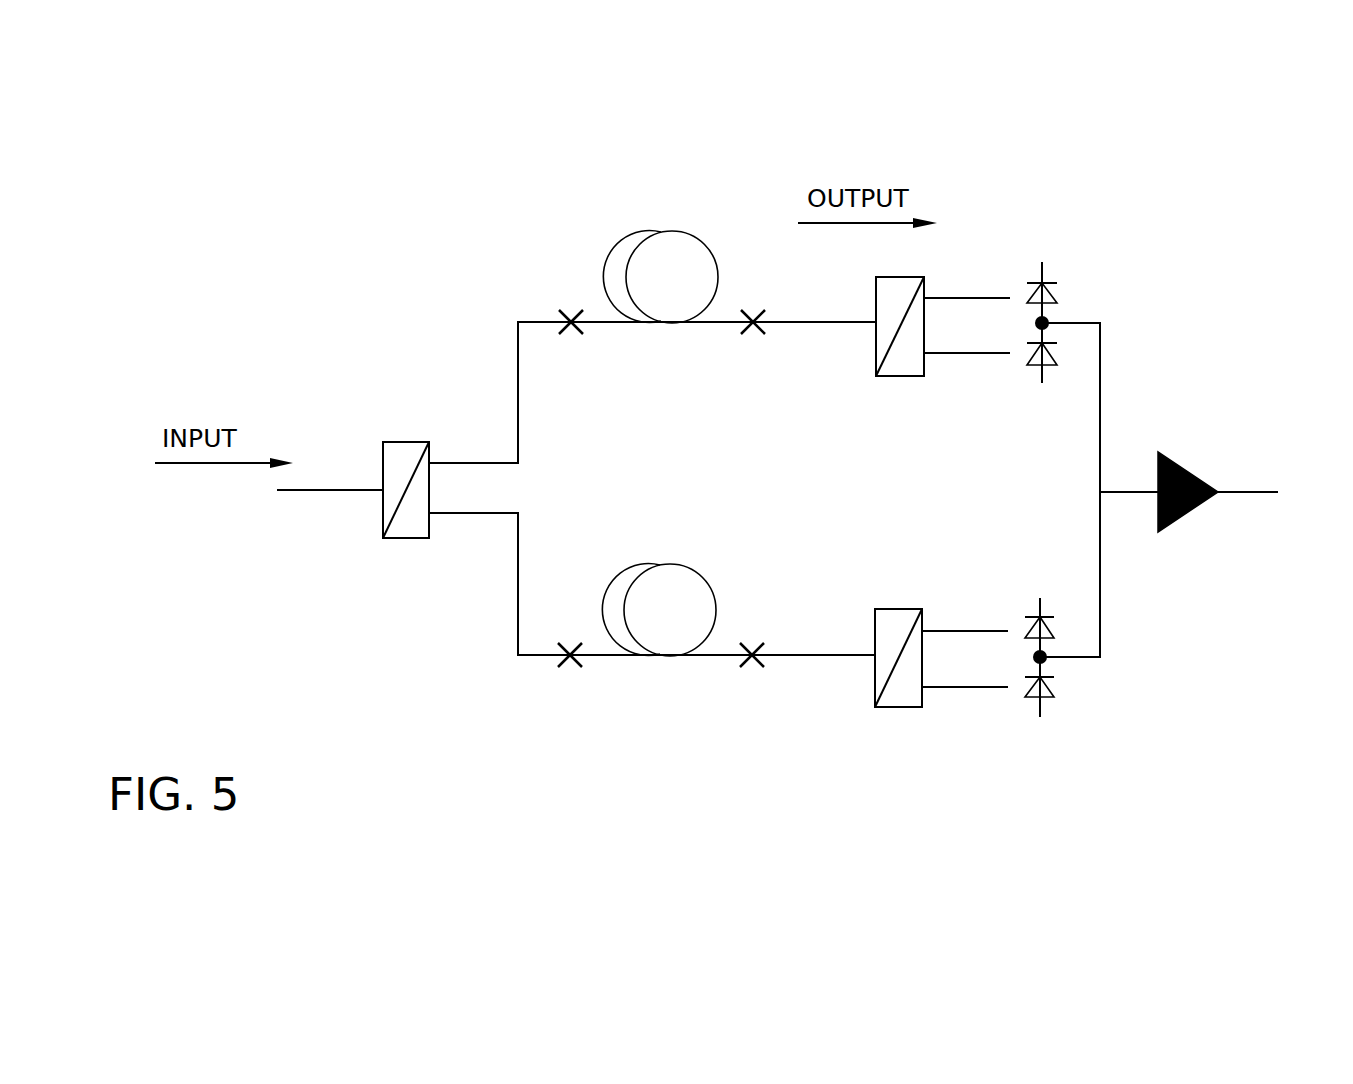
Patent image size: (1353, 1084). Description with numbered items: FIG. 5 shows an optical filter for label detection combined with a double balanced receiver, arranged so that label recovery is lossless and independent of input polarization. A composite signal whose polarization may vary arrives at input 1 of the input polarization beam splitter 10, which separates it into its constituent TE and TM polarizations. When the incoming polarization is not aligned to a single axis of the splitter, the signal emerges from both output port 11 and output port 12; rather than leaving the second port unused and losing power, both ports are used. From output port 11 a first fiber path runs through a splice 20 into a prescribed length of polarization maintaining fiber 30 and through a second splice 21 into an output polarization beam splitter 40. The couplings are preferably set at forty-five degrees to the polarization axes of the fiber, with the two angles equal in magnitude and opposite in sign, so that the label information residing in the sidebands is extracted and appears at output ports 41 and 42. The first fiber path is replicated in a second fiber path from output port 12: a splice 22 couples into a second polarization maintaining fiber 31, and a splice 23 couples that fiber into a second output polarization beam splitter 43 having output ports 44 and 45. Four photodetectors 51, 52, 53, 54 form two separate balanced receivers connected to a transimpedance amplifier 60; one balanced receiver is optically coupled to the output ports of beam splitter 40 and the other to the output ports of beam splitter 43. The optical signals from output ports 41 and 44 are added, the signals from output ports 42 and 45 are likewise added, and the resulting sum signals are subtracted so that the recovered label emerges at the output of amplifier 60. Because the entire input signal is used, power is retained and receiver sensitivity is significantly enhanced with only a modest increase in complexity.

The input 1 is at (277, 490).
The input polarization beam splitter 10 is at (408, 442).
The output port 11 is at (477, 463).
The output port 12 is at (473, 513).
The splice 20 is at (571, 310).
The splice 21 is at (753, 310).
The splice 22 is at (560, 668).
The splice 23 is at (747, 668).
The polarization maintaining fiber 30 is at (693, 230).
The polarization maintaining fiber 31 is at (688, 563).
The output polarization beam splitter 40 is at (902, 277).
The output port 41 is at (943, 298).
The output port 42 is at (943, 353).
The second output polarization beam splitter 43 is at (897, 707).
The output port 44 is at (942, 631).
The output port 45 is at (942, 687).
The photodetector 51 is at (1050, 295).
The photodetector 52 is at (1050, 353).
The photodetector 53 is at (1052, 630).
The photodetector 54 is at (1052, 687).
The transimpedance amplifier 60 is at (1177, 462).